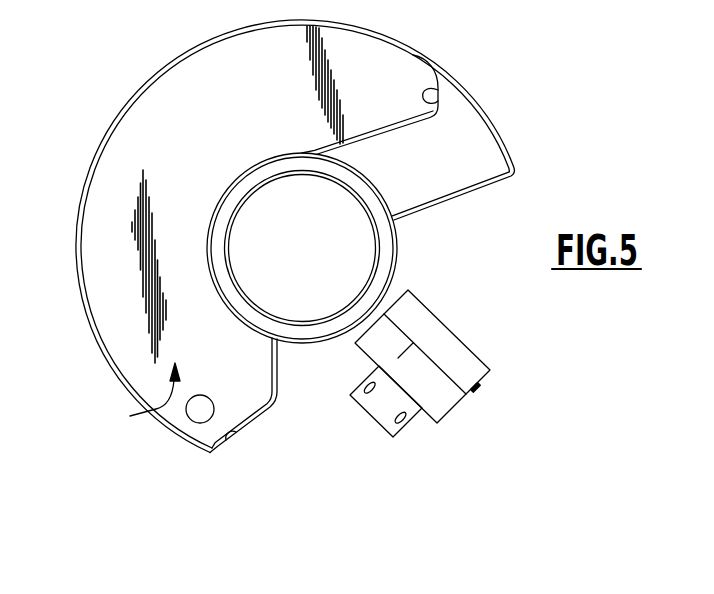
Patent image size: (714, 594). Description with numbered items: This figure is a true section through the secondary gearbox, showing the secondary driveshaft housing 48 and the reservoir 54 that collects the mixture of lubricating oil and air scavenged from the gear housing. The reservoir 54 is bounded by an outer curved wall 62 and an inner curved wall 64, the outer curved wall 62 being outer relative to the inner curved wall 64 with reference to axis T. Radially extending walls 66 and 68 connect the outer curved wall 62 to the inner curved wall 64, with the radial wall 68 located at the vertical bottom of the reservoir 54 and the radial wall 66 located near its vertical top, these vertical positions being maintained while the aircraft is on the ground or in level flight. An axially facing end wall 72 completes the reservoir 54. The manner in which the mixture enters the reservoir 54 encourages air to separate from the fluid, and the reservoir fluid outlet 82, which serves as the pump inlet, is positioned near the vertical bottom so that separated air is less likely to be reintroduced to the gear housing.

The secondary driveshaft housing 48 is at (305, 262).
The reservoir 54 is at (140, 396).
The outer curved wall 62 is at (157, 72).
The inner curved wall 64 is at (217, 268).
The radially extending wall 66 is at (446, 101).
The radially extending wall 68 is at (229, 437).
The axially facing end wall 72 is at (123, 330).
The reservoir fluid outlet 82 is at (197, 421).